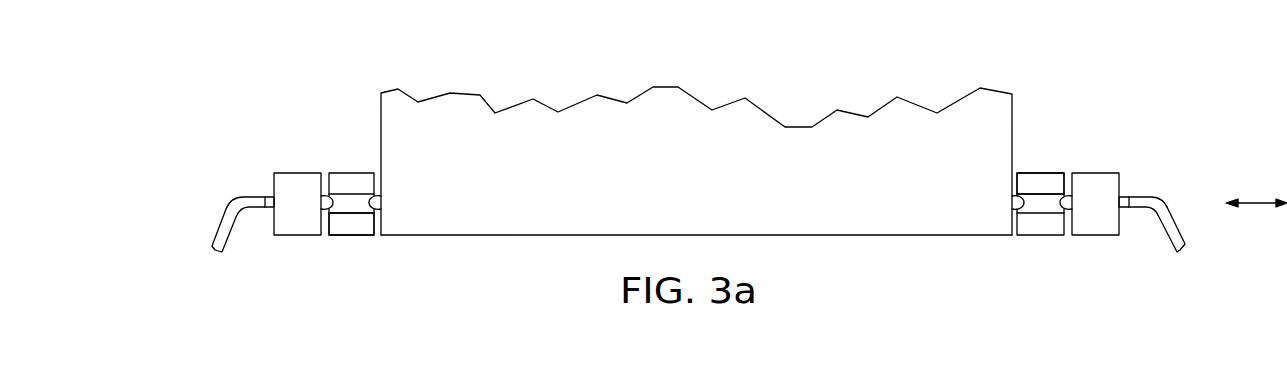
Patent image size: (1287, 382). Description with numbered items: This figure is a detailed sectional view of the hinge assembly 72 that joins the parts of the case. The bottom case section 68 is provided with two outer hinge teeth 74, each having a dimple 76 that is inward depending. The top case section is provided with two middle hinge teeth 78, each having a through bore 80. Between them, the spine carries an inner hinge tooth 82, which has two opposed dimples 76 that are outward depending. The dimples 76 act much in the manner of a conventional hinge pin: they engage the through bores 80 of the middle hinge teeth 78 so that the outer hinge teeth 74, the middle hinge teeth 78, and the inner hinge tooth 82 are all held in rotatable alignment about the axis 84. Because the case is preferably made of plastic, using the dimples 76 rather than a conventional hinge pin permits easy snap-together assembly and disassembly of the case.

The bottom case section 68 is at (226, 206).
The hinge assembly 72 is at (696, 287).
The outer hinge teeth 74 is at (288, 178).
The dimple 76 is at (322, 202).
The middle hinge teeth 78 is at (350, 227).
The through bore 80 is at (347, 203).
The inner hinge tooth 82 is at (735, 200).
The axis 84 is at (1258, 201).